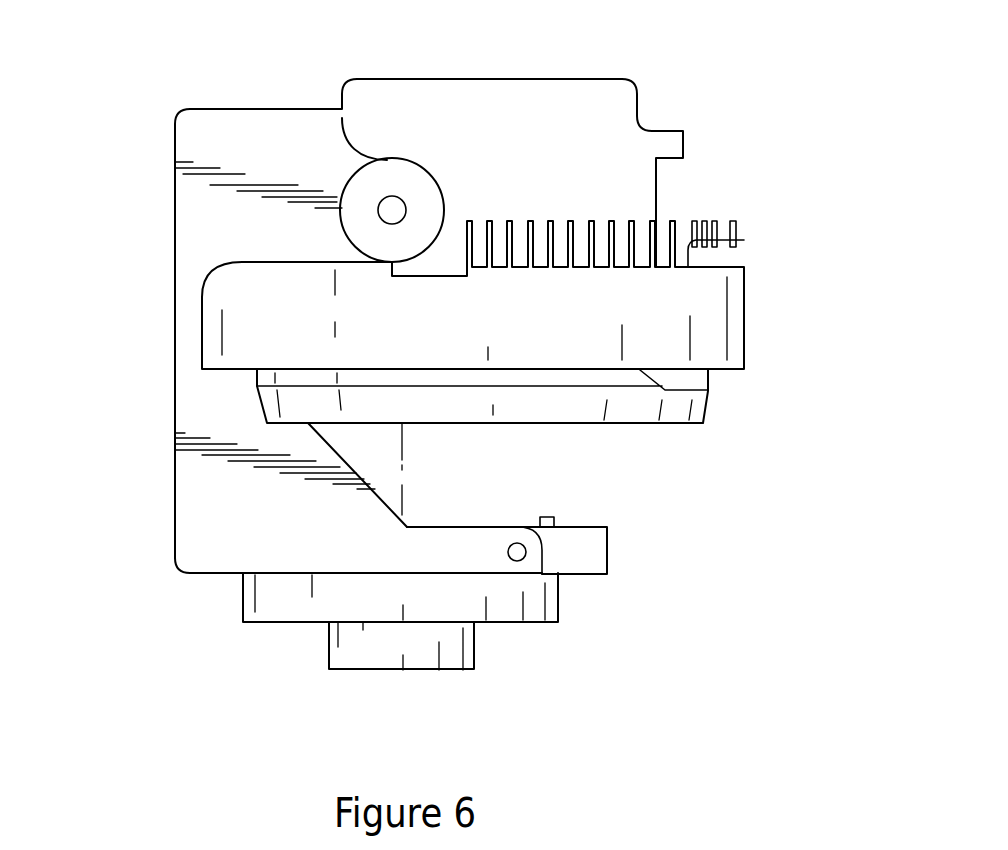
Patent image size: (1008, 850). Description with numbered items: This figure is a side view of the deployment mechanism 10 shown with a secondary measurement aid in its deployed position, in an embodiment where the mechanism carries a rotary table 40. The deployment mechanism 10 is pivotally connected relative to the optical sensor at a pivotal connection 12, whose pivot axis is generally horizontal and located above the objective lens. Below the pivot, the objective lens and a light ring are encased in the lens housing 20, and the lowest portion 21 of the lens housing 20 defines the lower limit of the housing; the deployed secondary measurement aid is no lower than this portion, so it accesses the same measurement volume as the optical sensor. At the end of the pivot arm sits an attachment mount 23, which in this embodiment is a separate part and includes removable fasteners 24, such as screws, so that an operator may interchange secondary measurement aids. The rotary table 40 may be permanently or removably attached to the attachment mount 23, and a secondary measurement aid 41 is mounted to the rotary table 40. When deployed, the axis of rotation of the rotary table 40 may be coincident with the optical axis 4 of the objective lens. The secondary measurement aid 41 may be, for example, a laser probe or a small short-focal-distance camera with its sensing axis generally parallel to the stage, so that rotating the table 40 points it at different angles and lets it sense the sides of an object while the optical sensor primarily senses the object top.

The deployment mechanism 10 is at (175, 450).
The pivotal connection 12 is at (390, 207).
The lens housing 20 is at (745, 311).
The lowest portion of the lens housing 21 is at (685, 425).
The optical axis 4 is at (402, 470).
The attachment mount 23 is at (607, 552).
The removable fasteners 24 is at (554, 520).
The rotary table 40 is at (558, 600).
The secondary measurement aid 41 is at (474, 650).